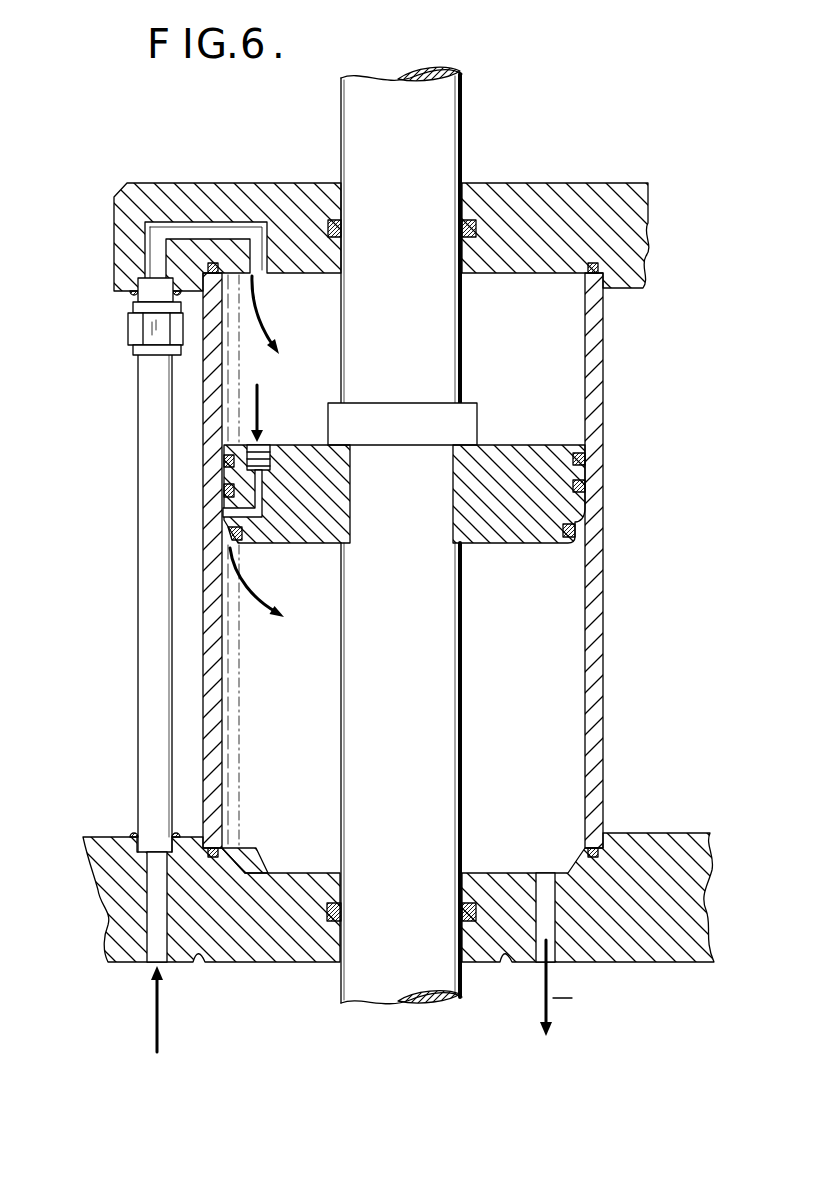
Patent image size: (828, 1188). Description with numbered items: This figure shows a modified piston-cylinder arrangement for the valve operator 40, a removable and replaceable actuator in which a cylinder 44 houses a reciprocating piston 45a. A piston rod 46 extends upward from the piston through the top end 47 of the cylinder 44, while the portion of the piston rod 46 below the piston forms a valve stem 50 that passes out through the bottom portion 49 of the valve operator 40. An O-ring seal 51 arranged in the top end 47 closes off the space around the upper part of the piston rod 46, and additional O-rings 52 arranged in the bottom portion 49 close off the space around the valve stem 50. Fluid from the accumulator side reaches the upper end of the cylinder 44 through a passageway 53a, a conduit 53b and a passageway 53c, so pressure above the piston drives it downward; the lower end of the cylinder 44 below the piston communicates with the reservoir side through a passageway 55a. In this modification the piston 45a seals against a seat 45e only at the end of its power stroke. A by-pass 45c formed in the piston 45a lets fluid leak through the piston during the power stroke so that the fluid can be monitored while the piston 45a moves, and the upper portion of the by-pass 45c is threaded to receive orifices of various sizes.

The valve operator 40 is at (660, 172).
The cylinder 44 is at (600, 402).
The piston 45a is at (512, 452).
The by-pass 45c is at (268, 445).
The seat 45e is at (250, 852).
The piston rod 46 is at (445, 127).
The top end 47 is at (612, 236).
The bottom portion 49 is at (672, 860).
The valve stem 50 is at (420, 693).
The O-ring seal 51 is at (462, 232).
The O-rings 52 is at (345, 910).
The passageway 53a is at (152, 898).
The conduit 53b is at (150, 528).
The passageway 53c is at (200, 232).
The passageway 55a is at (547, 880).